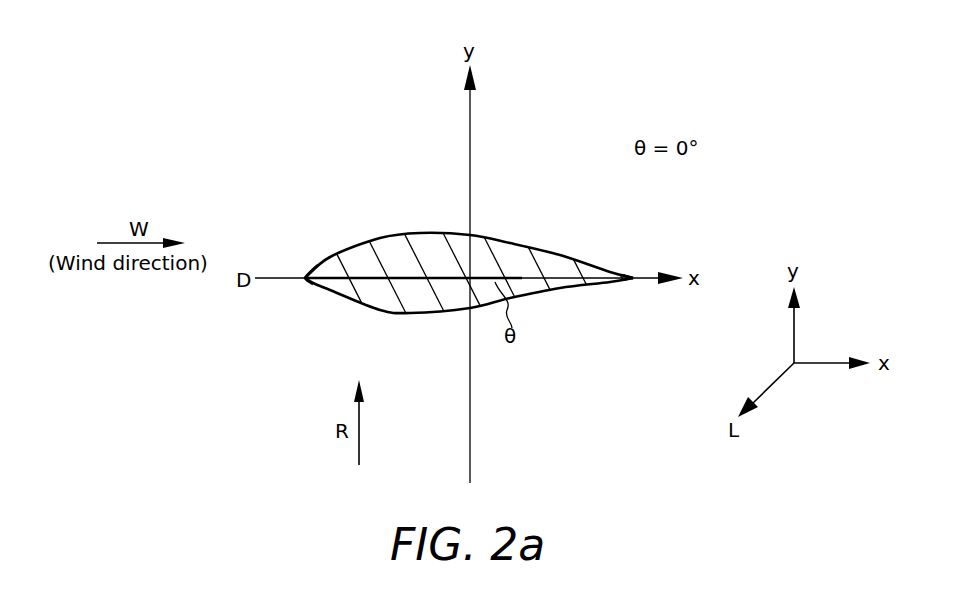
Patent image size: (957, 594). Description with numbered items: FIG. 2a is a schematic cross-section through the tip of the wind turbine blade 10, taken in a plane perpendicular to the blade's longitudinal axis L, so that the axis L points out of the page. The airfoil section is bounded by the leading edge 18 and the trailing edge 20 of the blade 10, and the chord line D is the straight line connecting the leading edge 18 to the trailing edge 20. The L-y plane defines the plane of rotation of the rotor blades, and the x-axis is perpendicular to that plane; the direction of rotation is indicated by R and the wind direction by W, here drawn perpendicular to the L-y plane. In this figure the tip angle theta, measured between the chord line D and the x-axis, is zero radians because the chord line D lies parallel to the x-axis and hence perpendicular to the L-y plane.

The wind turbine blade 10 is at (562, 257).
The leading edge 18 is at (307, 279).
The trailing edge 20 is at (640, 282).